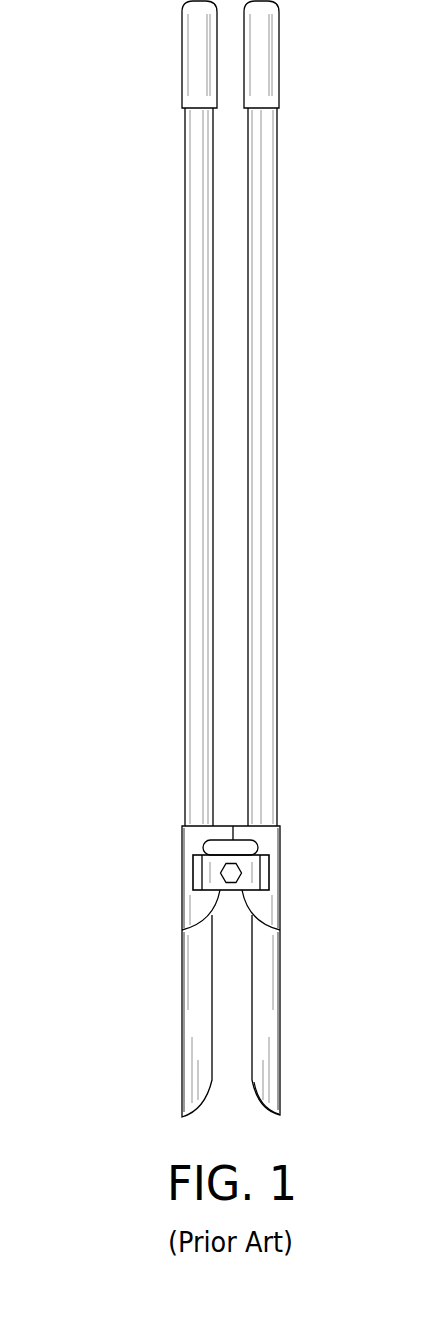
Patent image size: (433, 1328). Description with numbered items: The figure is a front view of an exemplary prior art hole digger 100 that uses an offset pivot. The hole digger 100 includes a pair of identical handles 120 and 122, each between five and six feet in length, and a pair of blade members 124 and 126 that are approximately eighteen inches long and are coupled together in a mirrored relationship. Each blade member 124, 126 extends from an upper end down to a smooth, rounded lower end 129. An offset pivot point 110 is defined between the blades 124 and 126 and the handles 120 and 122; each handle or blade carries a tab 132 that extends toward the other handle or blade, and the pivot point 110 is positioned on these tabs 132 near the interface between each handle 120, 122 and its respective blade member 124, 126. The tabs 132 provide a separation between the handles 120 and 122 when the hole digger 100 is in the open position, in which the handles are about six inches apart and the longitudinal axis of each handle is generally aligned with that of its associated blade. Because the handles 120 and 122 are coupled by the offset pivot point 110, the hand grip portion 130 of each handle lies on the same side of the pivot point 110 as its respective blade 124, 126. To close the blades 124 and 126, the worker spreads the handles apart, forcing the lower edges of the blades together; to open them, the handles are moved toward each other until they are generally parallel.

The hole digger 100 is at (115, 463).
The offset pivot point 110 is at (242, 873).
The handle 120 is at (185, 297).
The handle 122 is at (278, 302).
The blade member 124 is at (182, 1003).
The blade member 126 is at (280, 1007).
The lower end 129 is at (276, 1117).
The hand grip portion 130 is at (182, 57).
The tab 132 is at (182, 837).